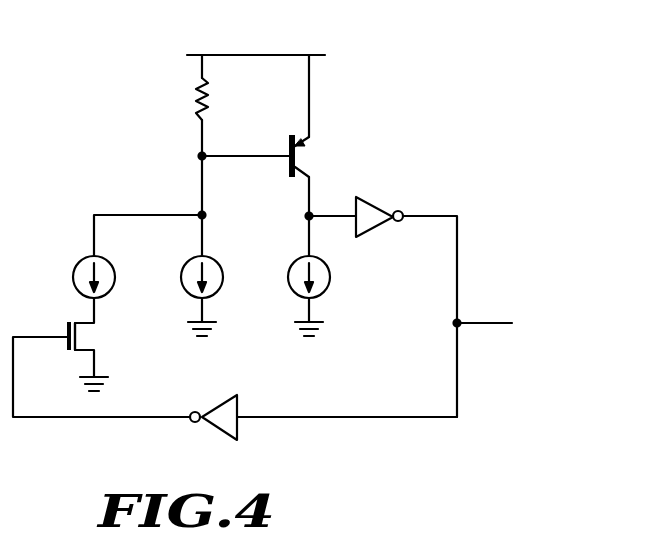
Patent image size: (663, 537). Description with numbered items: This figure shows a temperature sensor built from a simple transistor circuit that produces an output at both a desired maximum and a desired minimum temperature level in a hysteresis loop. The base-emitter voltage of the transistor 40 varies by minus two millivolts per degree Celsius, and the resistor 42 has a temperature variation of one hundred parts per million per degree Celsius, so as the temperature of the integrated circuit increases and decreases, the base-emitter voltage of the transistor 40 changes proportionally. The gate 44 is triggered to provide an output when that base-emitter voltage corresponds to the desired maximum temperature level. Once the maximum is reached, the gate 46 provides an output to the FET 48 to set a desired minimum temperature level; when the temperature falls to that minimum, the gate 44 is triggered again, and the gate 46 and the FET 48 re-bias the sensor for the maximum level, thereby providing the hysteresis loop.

The transistor 40 is at (297, 154).
The resistor 42 is at (198, 100).
The gate 44 is at (372, 201).
The gate 46 is at (218, 400).
The FET 48 is at (69, 322).